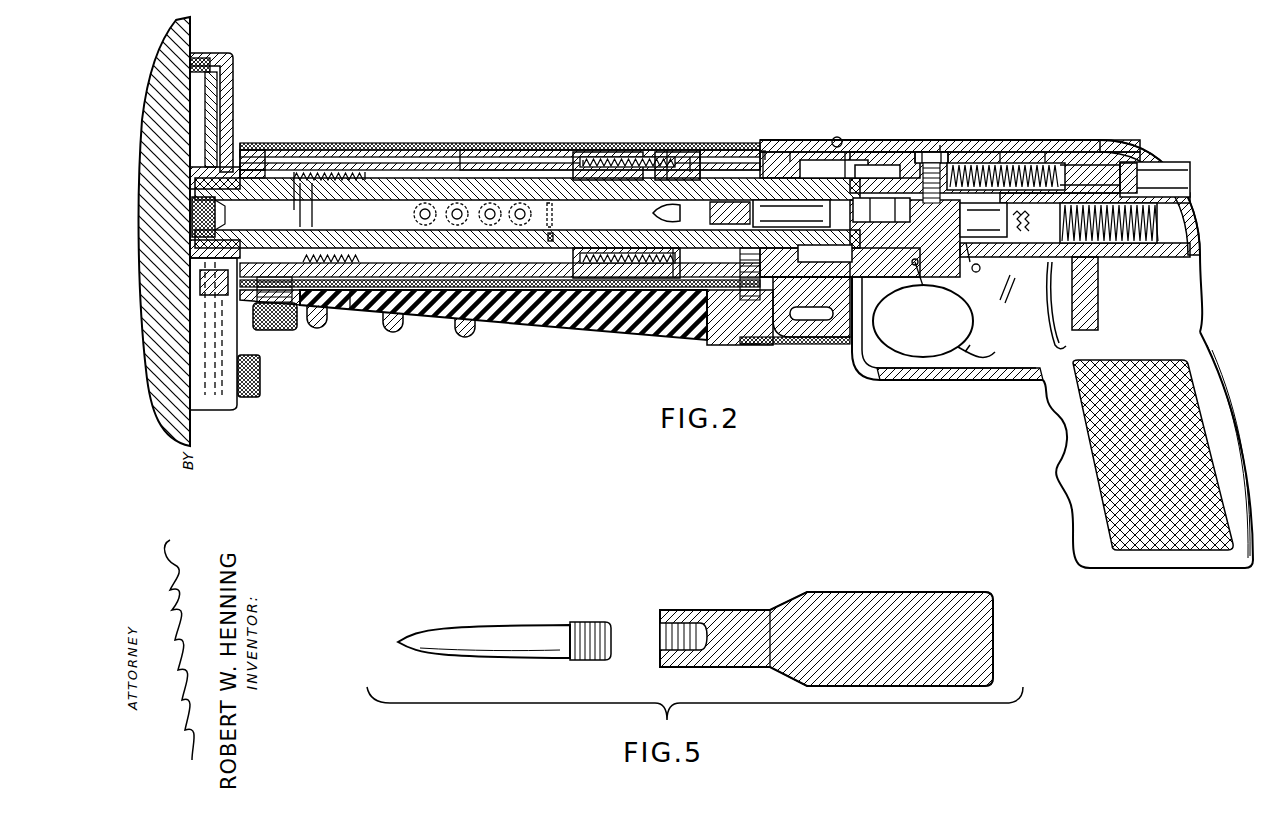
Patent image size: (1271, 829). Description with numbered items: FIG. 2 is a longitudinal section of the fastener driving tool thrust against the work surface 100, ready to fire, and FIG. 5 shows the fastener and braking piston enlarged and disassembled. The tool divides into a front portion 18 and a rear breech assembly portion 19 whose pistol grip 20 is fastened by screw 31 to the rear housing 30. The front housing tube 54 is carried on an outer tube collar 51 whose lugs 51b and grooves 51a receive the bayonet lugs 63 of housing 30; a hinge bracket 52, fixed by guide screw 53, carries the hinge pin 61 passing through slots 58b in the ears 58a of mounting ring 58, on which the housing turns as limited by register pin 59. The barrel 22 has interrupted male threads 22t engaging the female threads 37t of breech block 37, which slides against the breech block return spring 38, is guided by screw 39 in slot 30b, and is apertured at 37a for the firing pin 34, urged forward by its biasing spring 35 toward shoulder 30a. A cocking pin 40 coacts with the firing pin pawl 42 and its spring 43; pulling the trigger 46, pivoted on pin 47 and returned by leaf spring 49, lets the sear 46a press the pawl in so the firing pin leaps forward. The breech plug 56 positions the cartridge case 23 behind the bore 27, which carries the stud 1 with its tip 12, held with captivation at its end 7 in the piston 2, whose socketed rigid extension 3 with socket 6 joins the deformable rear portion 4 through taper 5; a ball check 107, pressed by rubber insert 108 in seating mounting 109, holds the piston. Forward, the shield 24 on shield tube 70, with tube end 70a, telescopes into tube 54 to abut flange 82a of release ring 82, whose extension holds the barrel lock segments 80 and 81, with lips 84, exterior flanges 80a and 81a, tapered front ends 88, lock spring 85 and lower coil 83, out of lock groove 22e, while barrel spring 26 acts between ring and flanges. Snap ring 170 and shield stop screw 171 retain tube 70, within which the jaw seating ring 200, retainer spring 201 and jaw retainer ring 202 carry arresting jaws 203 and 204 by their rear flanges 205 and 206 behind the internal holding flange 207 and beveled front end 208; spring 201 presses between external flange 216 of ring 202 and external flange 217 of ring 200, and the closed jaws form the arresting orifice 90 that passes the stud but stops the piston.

In FIG. 5, the stud 1 is at (497, 630).
In FIG. 2, the piston 2 is at (812, 245).
In FIG. 5, the piston 2 is at (835, 586).
In FIG. 5, the rigid extension 3 is at (723, 611).
In FIG. 5, the rear end piston portion 4 is at (990, 617).
In FIG. 5, the taper 5 is at (793, 600).
In FIG. 5, the threaded bore 6 is at (660, 637).
In FIG. 5, the pin threads 7 is at (588, 655).
In FIG. 2, the tip 12 is at (655, 214).
In FIG. 2, the front portion 18 is at (555, 89).
In FIG. 2, the rear breech assembly portion 19 is at (858, 84).
In FIG. 2, the pistol grip 20 is at (1215, 382).
In FIG. 2, the barrel 22 is at (447, 180).
In FIG. 2, the lock groove 22e is at (688, 300).
In FIG. 2, the interrupted male threads 22t is at (873, 173).
In FIG. 2, the cartridge case 23 is at (883, 207).
In FIG. 2, the shield 24 is at (235, 62).
In FIG. 2, the barrel compression spring 26 is at (647, 173).
In FIG. 2, the bore 27 is at (622, 213).
In FIG. 2, the rear housing 30 is at (1107, 141).
In FIG. 2, the shoulder 30a is at (1000, 160).
In FIG. 2, the axially extending slot 30b is at (940, 145).
In FIG. 2, the screw 31 is at (1133, 161).
In FIG. 2, the firing pin 34 is at (1025, 170).
In FIG. 2, the firing pin biasing spring 35 is at (1180, 256).
In FIG. 2, the barrel breech block 37 is at (933, 153).
In FIG. 2, the aperture 37a is at (953, 243).
In FIG. 2, the interrupted female threads 37t is at (915, 160).
In FIG. 2, the breech block return spring 38 is at (1046, 163).
In FIG. 2, the breech block screw 39 is at (946, 150).
In FIG. 2, the cocking pin 40 is at (977, 270).
In FIG. 2, the firing pin pawl 42 is at (1006, 285).
In FIG. 2, the spring 43 is at (1073, 148).
In FIG. 2, the trigger 46 is at (980, 350).
In FIG. 2, the sear 46a is at (1060, 266).
In FIG. 2, the transverse pin 47 is at (968, 245).
In FIG. 2, the leaf spring 49 is at (1066, 330).
In FIG. 2, the outer tube collar 51 is at (700, 160).
In FIG. 2, the mating grooves 51a is at (765, 150).
In FIG. 2, the lugs 51b is at (790, 153).
In FIG. 2, the hinge bracket 52 is at (723, 332).
In FIG. 2, the guide screw 53 is at (753, 302).
In FIG. 2, the front housing tube 54 is at (535, 143).
In FIG. 2, the breech plug 56 is at (915, 265).
In FIG. 2, the mounting ring 58 is at (847, 167).
In FIG. 2, the ears 58a is at (775, 346).
In FIG. 2, the slots 58b is at (776, 344).
In FIG. 2, the register pin 59 is at (837, 137).
In FIG. 2, the hinge pin 61 is at (812, 322).
In FIG. 2, the bayonet lugs 63 is at (763, 150).
In FIG. 2, the shield tube 70 is at (345, 165).
In FIG. 2, the shield end cap 70a is at (258, 178).
In FIG. 2, the tubular barrel lock segment 80 is at (683, 163).
In FIG. 2, the exterior flange 80a is at (695, 172).
In FIG. 2, the tubular barrel lock segment 81 is at (645, 275).
In FIG. 2, the exterior flange 81a is at (673, 265).
In FIG. 2, the stop and barrel lock release ring 82 is at (612, 163).
In FIG. 2, the flange 82a is at (598, 163).
In FIG. 2, the lower spring 83 is at (549, 252).
In FIG. 2, the inwardly extending lip 84 is at (690, 150).
In FIG. 2, the annular coiled lock spring 85 is at (687, 350).
In FIG. 2, the tapered front ends 88 is at (667, 173).
In FIG. 2, the arresting orifice 90 is at (192, 205).
In FIG. 2, the work surface 100 is at (192, 424).
In FIG. 2, the ball check 107 is at (760, 204).
In FIG. 2, the compressed rubber insert 108 is at (720, 150).
In FIG. 2, the seating mounting 109 is at (834, 170).
In FIG. 2, the shield stopping snap ring 170 is at (405, 340).
In FIG. 2, the shield stop screw 171 is at (273, 332).
In FIG. 2, the jaw seating ring 200 is at (240, 143).
In FIG. 2, the retainer spring 201 is at (323, 177).
In FIG. 2, the jaw retainer ring 202 is at (390, 144).
In FIG. 2, the arresting jaw 203 is at (296, 195).
In FIG. 2, the arresting jaw 204 is at (304, 310).
In FIG. 2, the rear end flange 205 is at (368, 160).
In FIG. 2, the rear end flange 206 is at (350, 292).
In FIG. 2, the internal holding flange 207 is at (318, 173).
In FIG. 2, the beveled front end 208 is at (310, 200).
In FIG. 2, the external flange 216 is at (466, 329).
In FIG. 2, the external flange 217 is at (298, 310).